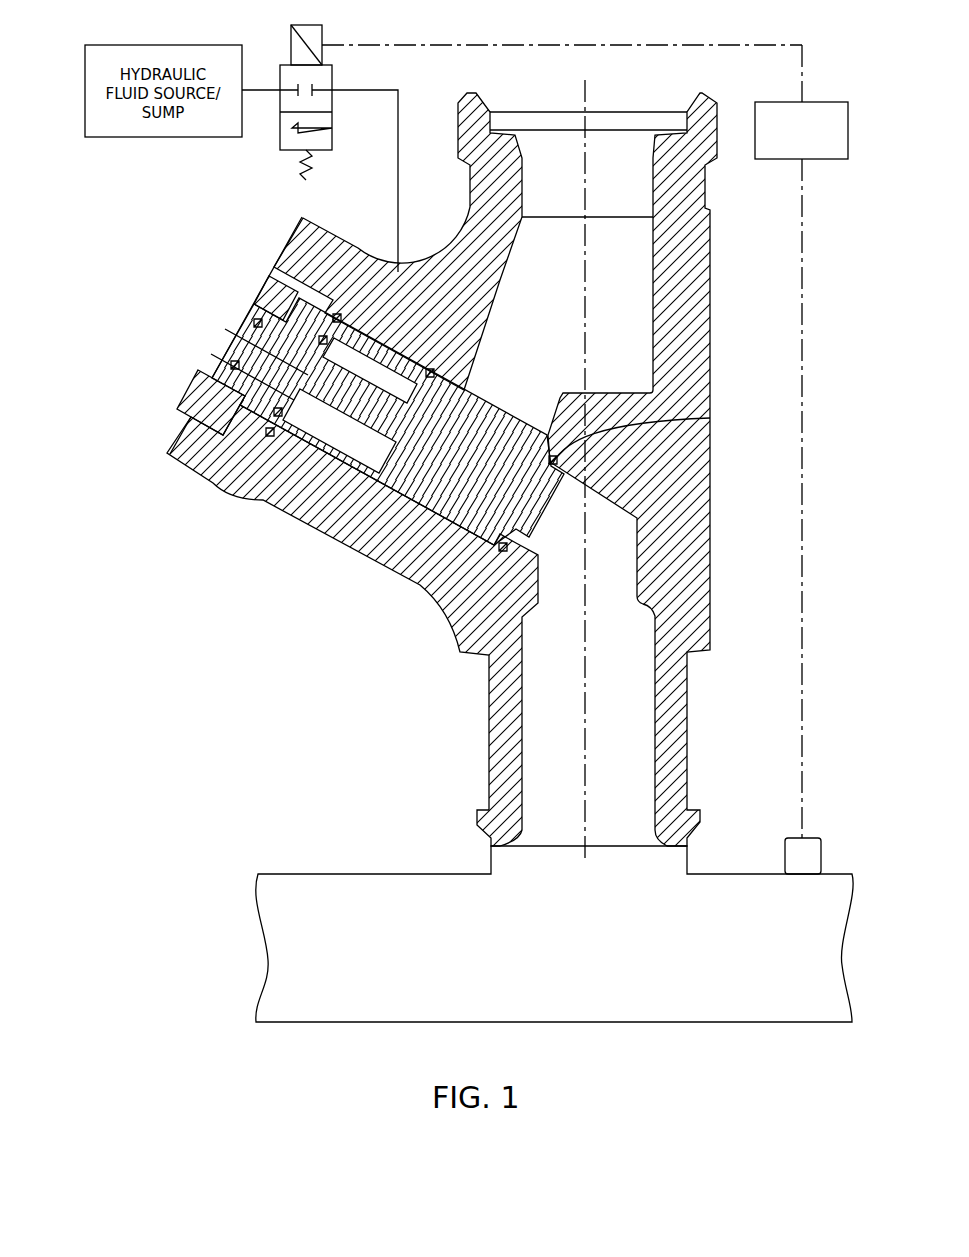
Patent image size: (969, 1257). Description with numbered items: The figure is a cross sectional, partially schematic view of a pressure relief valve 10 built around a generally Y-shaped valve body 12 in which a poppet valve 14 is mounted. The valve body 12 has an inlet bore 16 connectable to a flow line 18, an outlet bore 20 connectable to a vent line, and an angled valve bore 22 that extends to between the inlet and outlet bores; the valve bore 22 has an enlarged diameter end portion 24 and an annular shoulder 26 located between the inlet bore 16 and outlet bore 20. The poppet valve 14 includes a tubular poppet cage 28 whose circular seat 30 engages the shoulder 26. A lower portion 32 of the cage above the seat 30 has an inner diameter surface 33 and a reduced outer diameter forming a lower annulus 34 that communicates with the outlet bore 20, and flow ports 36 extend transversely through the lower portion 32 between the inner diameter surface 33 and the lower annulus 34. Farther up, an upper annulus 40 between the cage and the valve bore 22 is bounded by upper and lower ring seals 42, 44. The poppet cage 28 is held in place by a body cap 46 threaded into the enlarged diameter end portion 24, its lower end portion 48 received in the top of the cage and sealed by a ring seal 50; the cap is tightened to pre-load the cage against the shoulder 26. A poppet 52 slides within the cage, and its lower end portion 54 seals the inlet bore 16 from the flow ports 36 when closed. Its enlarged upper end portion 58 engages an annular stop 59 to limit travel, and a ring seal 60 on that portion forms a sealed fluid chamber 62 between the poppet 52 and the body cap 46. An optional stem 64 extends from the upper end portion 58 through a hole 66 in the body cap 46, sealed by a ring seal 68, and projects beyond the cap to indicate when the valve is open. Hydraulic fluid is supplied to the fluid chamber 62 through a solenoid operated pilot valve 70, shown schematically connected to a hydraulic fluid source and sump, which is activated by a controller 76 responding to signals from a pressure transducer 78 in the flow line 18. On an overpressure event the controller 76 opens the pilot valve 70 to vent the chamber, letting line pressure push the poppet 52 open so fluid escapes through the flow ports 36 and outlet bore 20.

The pressure relief valve 10 is at (295, 738).
The valve body 12 is at (483, 676).
The poppet valve 14 is at (270, 262).
The inlet bore 16 is at (588, 726).
The flow line 18 is at (554, 934).
The outlet bore 20 is at (587, 187).
The valve bore 22 is at (600, 503).
The enlarged diameter end portion 24 is at (195, 406).
The annular shoulder 26 is at (548, 432).
The poppet cage 28 is at (300, 498).
The circular seat 30 is at (710, 418).
The lower portion 32 is at (420, 560).
The inner diameter surface 33 is at (548, 485).
The lower annulus 34 is at (425, 600).
The flow ports 36 is at (440, 600).
The upper annulus 40 is at (370, 327).
The upper ring seal 42 is at (338, 317).
The lower ring seal 44 is at (440, 375).
The body cap 46 is at (215, 478).
The lower end portion 48 is at (262, 490).
The ring seal 50 is at (250, 480).
The poppet 52 is at (470, 430).
The lower end portion 54 is at (520, 610).
The upper end portion 58 is at (318, 505).
The annular stop 59 is at (362, 535).
The ring seal 60 is at (340, 530).
The fluid chamber 62 is at (332, 430).
The stem 64 is at (242, 350).
The hole 66 is at (255, 325).
The ring seal 68 is at (235, 372).
The pilot valve 70 is at (262, 143).
The controller 76 is at (585, 441).
The pressure transducer 78 is at (808, 840).